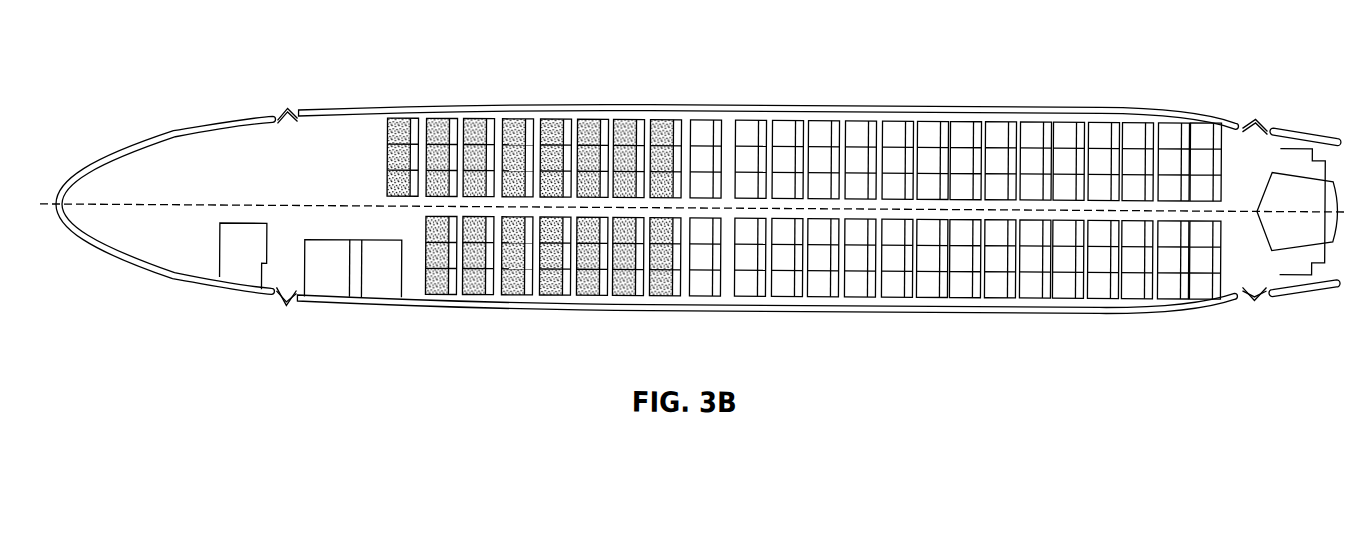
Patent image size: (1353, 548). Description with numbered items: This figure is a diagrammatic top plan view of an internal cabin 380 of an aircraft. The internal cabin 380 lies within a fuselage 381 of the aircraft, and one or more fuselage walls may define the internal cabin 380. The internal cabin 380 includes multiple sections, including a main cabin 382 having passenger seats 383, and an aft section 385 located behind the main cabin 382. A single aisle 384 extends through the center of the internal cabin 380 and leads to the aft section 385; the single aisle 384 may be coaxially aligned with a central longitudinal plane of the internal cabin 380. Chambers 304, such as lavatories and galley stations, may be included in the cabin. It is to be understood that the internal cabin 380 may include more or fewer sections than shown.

The internal cabin 380 is at (300, 46).
The fuselage 381 is at (503, 102).
The main cabin 382 is at (440, 118).
The passenger seats 383 is at (703, 134).
The single aisle 384 is at (823, 200).
The aft section 385 is at (1240, 136).
The chambers 304 is at (355, 268).